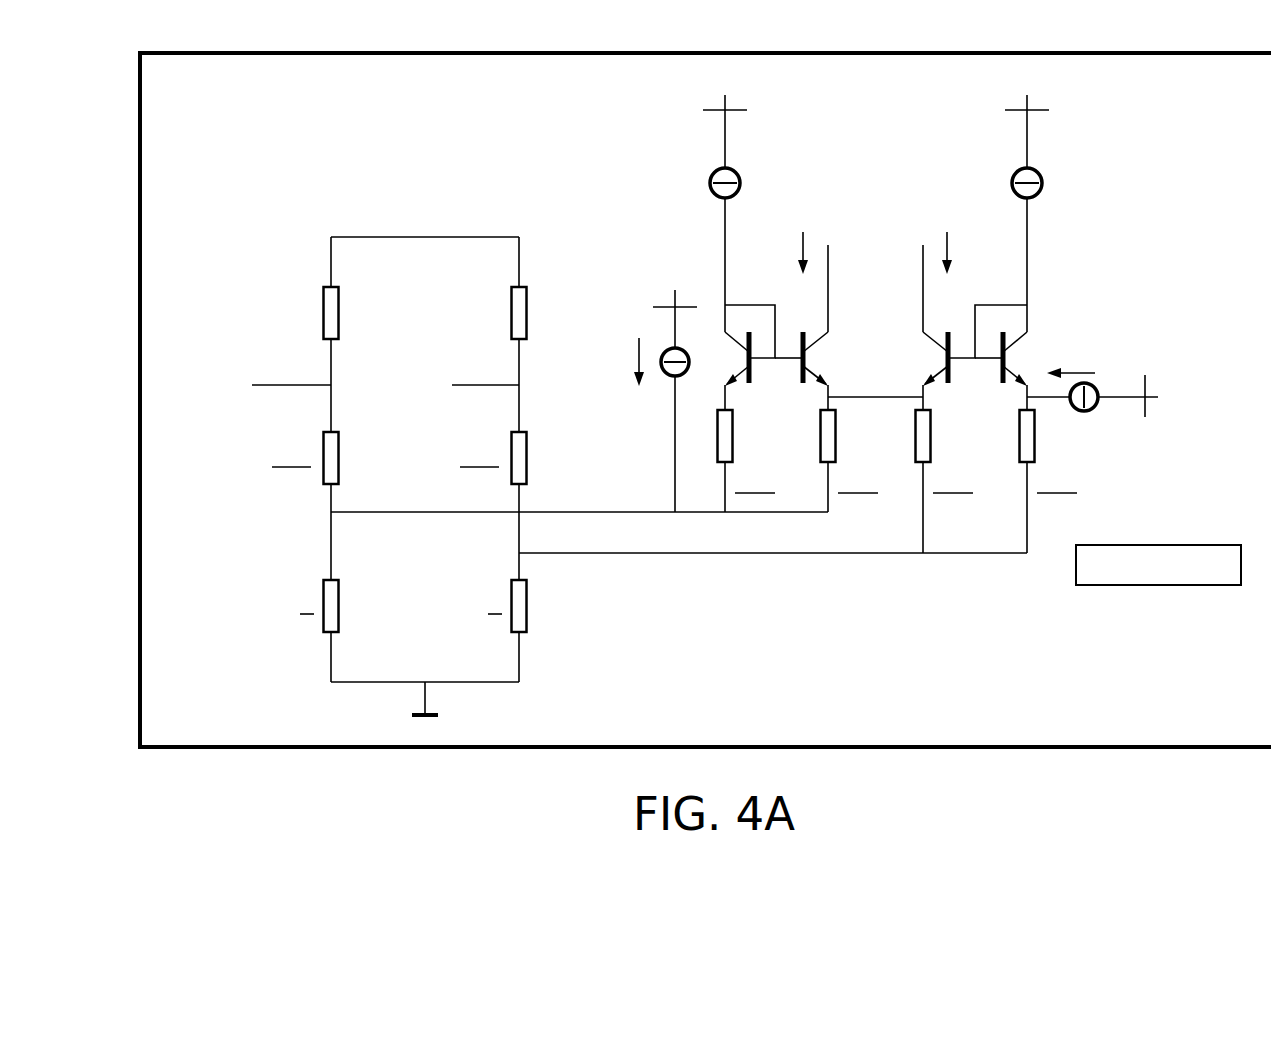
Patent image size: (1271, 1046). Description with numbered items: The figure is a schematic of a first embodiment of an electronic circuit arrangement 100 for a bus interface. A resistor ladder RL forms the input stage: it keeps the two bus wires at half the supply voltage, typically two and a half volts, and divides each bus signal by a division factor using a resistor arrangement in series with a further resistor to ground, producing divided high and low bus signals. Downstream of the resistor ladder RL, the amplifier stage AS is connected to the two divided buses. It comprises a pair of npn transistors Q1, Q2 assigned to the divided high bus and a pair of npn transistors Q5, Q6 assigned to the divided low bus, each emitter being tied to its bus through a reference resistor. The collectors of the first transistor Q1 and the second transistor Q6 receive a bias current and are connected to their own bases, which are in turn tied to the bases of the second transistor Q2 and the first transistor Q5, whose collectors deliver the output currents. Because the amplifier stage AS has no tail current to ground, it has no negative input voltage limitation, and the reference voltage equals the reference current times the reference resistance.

The electronic circuit arrangement 100 is at (1203, 747).
The resistor ladder RL is at (441, 656).
The amplifier stage AS is at (915, 353).
The first transistor Q1 is at (739, 357).
The second transistor Q2 is at (811, 327).
The first transistor Q5 is at (965, 327).
The second transistor Q6 is at (1010, 371).